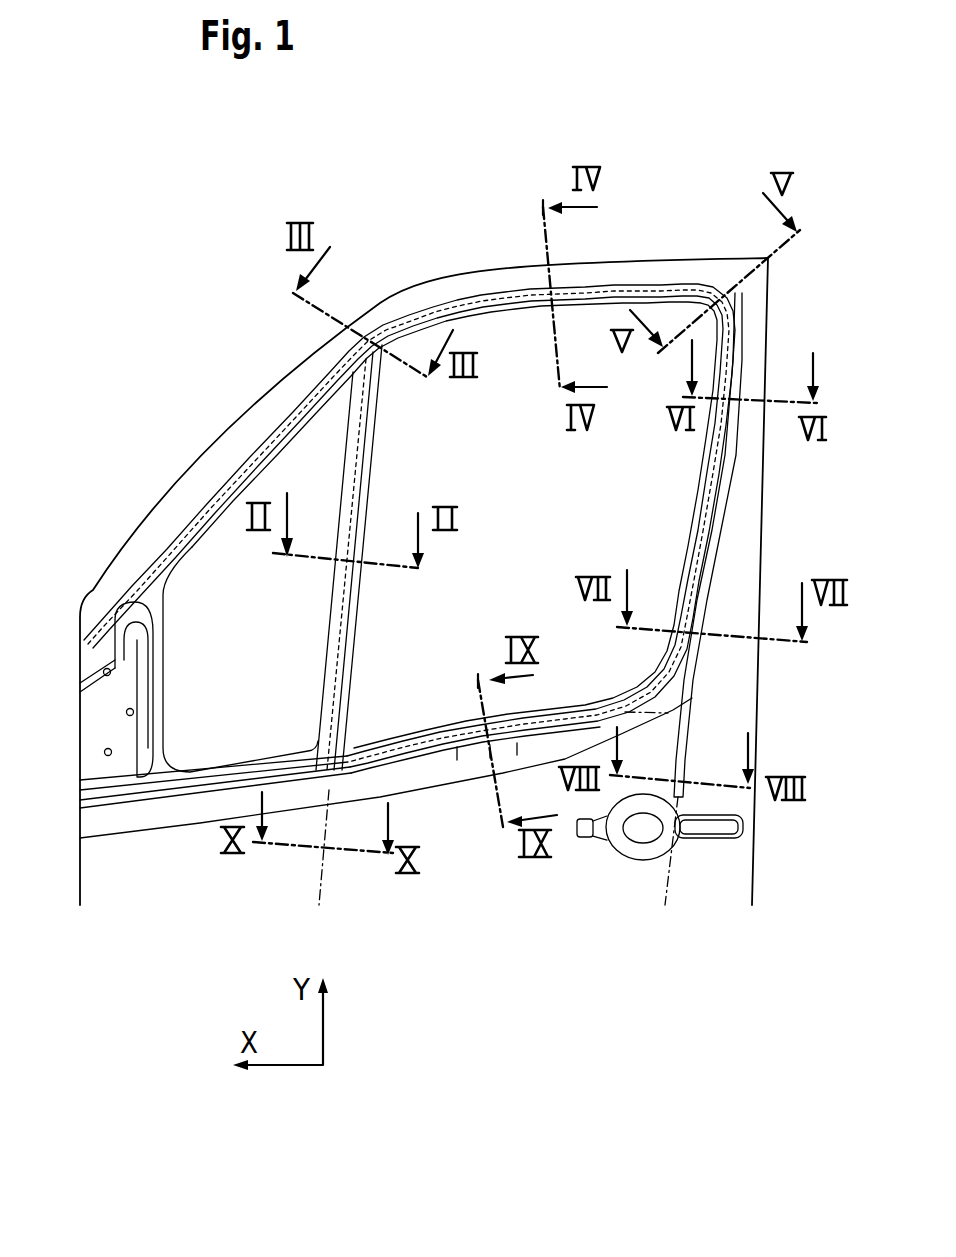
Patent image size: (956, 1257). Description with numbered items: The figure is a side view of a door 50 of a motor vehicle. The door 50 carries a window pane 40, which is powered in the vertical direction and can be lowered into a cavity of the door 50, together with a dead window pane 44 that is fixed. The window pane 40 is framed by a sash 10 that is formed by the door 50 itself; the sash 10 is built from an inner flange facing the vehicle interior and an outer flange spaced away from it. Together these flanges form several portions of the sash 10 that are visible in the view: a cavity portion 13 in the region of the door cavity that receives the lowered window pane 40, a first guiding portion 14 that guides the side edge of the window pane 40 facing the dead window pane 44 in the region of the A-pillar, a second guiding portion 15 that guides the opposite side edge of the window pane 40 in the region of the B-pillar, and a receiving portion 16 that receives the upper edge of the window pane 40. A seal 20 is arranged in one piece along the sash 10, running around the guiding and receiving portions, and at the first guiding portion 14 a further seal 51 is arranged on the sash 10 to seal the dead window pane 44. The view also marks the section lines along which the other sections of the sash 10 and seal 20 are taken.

The sash 10 is at (494, 286).
The cavity portion 13 is at (457, 750).
The first guiding portion 14 is at (365, 455).
The second guiding portion 15 is at (720, 477).
The receiving portion 16 is at (623, 287).
The seal 20 is at (527, 308).
The window pane 40 is at (558, 536).
The dead window pane 44 is at (250, 645).
The door 50 is at (229, 355).
The seal 51 is at (328, 688).